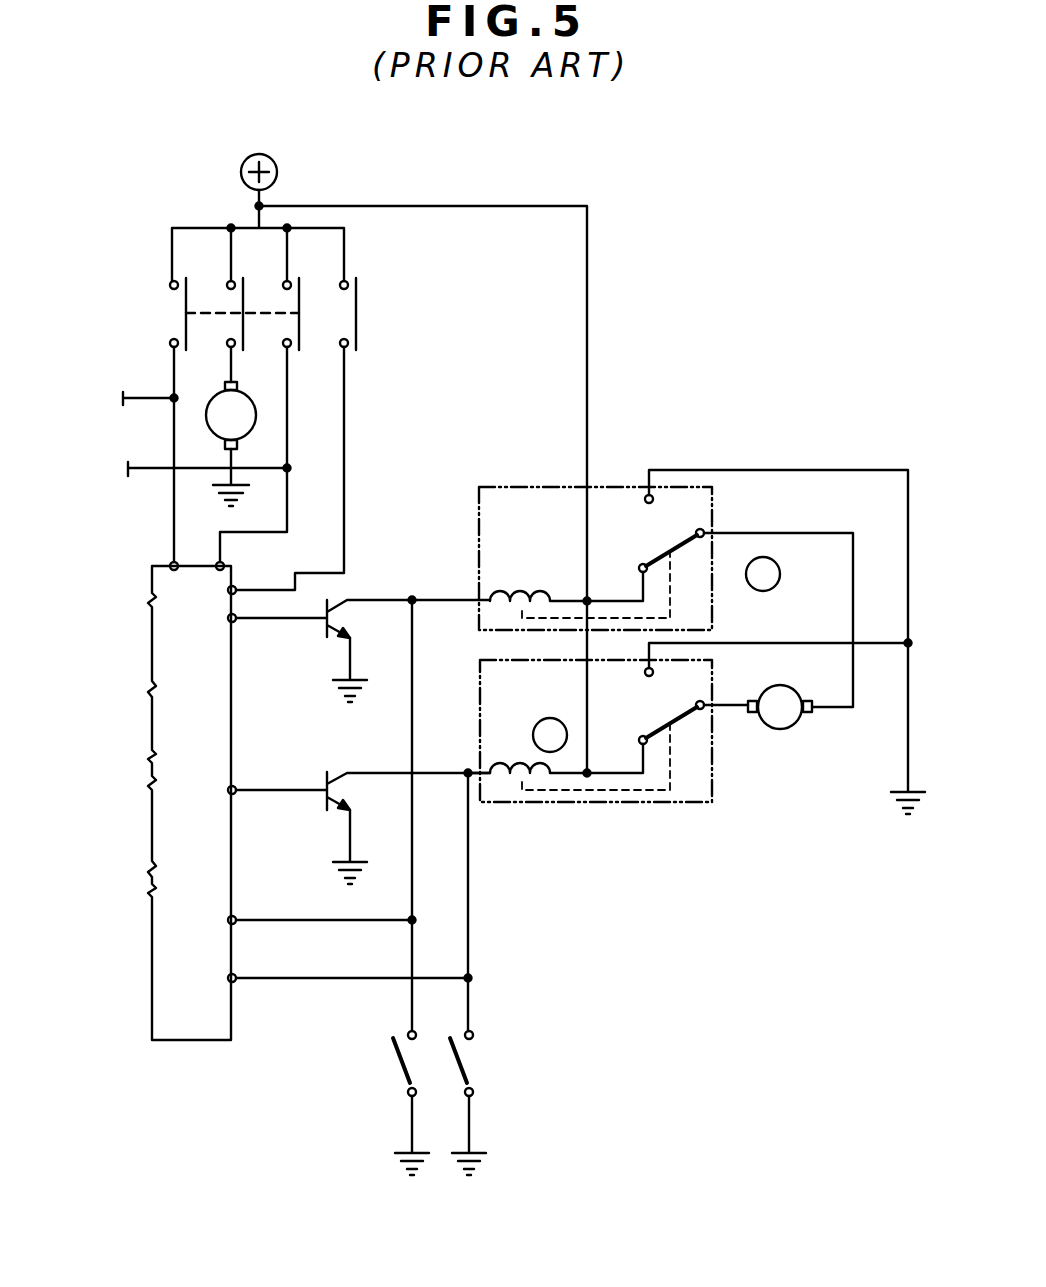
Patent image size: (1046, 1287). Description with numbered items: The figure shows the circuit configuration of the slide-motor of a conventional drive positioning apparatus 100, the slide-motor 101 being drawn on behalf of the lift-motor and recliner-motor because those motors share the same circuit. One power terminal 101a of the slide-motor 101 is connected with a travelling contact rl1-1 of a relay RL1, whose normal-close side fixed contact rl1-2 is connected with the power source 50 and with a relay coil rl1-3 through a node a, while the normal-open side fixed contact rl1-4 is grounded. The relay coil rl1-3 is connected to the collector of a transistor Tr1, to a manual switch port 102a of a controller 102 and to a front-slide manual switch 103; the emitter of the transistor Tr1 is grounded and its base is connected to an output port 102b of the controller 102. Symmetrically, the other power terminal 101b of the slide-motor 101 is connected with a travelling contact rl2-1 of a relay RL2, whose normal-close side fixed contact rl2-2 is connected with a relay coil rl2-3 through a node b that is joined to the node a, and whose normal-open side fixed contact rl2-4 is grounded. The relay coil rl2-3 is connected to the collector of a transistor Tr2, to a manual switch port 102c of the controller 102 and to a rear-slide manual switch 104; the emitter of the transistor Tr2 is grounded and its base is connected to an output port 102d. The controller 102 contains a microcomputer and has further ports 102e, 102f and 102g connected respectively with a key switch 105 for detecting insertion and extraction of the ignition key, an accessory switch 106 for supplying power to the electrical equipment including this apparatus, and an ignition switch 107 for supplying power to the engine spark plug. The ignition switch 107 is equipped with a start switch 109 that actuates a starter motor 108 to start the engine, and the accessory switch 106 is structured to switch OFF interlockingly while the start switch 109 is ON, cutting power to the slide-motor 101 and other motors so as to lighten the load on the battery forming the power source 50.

The power source 50 is at (267, 156).
The drive positioning apparatus 100 is at (720, 308).
The slide-motor 101 is at (780, 730).
The power terminal 101a is at (809, 714).
The power terminal 101b is at (751, 714).
The controller 102 is at (193, 1040).
The manual switch port 102a is at (236, 917).
The output port 102b is at (236, 622).
The manual switch port 102c is at (236, 975).
The output port 102d is at (236, 787).
The port 102e is at (236, 588).
The port 102f is at (217, 562).
The port 102g is at (171, 563).
The front-slide manual switch 103 is at (396, 1064).
The rear-slide manual switch 104 is at (468, 1060).
The key switch 105 is at (356, 302).
The accessory switch 106 is at (301, 332).
The ignition switch 107 is at (186, 305).
The starter motor 108 is at (207, 421).
The start switch 109 is at (243, 327).
The transistor Tr1 is at (363, 651).
The transistor Tr2 is at (363, 828).
The relay RL1 is at (608, 483).
The relay RL2 is at (628, 807).
The travelling contact rl1-1 is at (682, 540).
The normal-close side fixed contact rl1-2 is at (639, 568).
The relay coil rl1-3 is at (521, 591).
The normal-open side fixed contact rl1-4 is at (648, 494).
The travelling contact rl2-1 is at (687, 700).
The normal-close side fixed contact rl2-2 is at (639, 742).
The relay coil rl2-3 is at (521, 762).
The normal-open side fixed contact rl2-4 is at (658, 670).
The node a is at (746, 574).
The node b is at (585, 771).